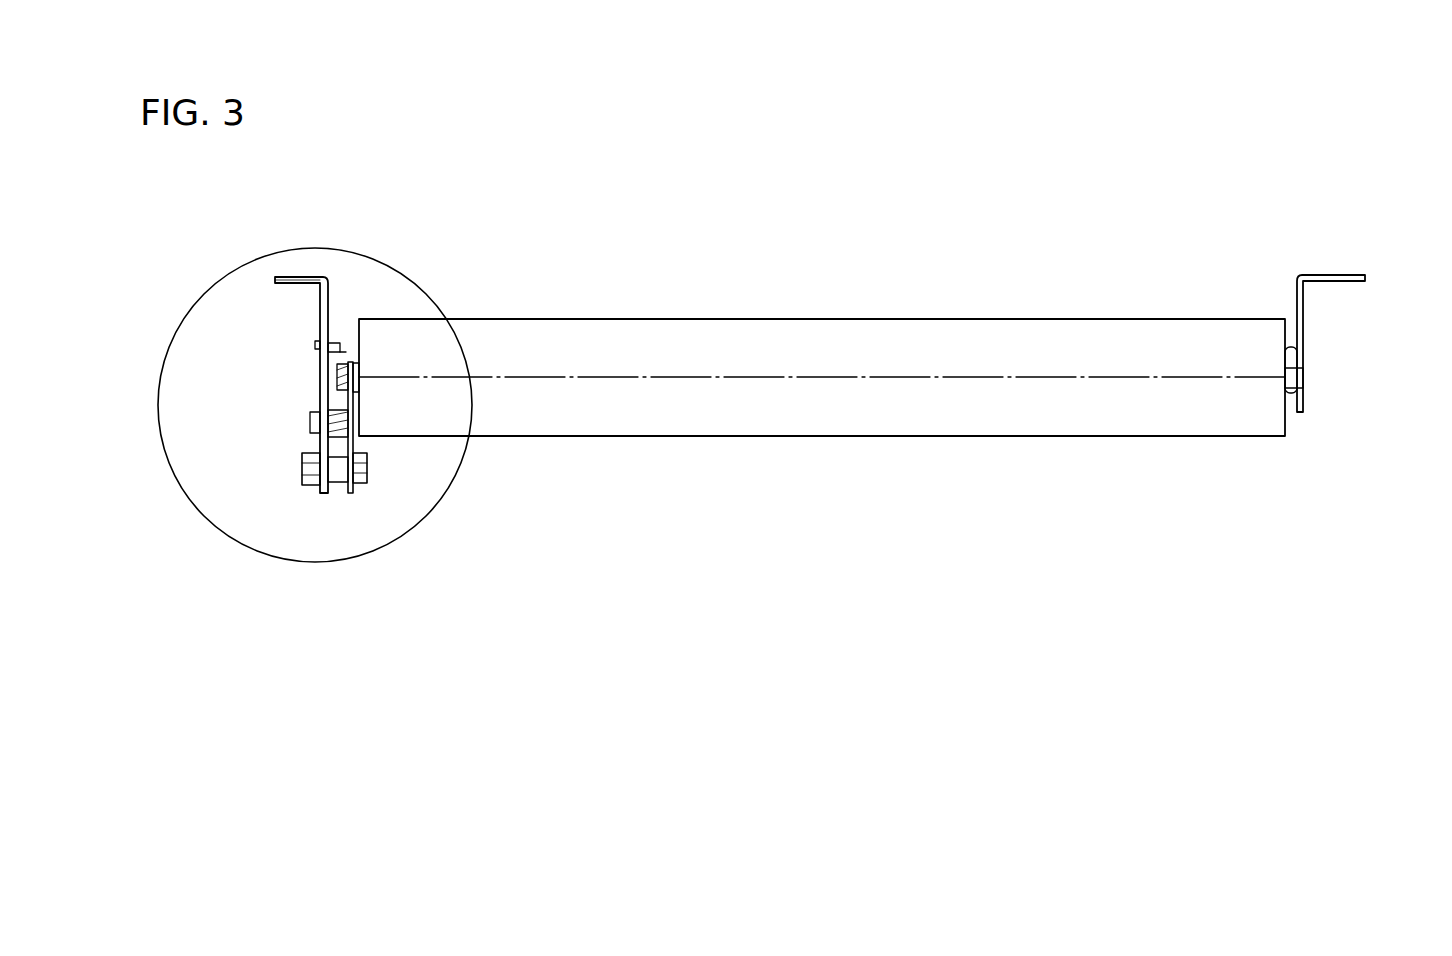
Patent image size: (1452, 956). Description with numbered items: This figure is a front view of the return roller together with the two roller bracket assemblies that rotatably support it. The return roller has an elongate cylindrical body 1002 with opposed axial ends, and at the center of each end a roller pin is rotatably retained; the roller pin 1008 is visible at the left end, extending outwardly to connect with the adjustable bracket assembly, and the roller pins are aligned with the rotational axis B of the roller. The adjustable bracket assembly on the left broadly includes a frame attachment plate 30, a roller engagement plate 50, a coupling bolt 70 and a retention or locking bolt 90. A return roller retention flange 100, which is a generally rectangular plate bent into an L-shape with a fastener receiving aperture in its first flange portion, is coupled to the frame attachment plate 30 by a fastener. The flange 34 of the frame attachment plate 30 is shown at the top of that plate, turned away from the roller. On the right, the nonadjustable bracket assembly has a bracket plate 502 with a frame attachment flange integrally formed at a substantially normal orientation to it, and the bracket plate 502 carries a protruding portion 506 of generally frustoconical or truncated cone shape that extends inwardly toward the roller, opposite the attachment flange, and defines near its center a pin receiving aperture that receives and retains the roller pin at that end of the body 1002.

The frame attachment plate 30 is at (325, 310).
The bracket flange 34 is at (300, 277).
The roller engagement plate 50 is at (353, 493).
The coupling bolt 70 is at (312, 478).
The retention or locking bolt 90 is at (308, 423).
The return roller retention flange 100 is at (335, 342).
The elongate cylindrical body 1002 is at (812, 340).
The roller pin 1008 is at (352, 362).
The bracket plate 502 is at (1303, 320).
The protruding portion 506 is at (1293, 395).
The rotational axis B is at (1068, 378).